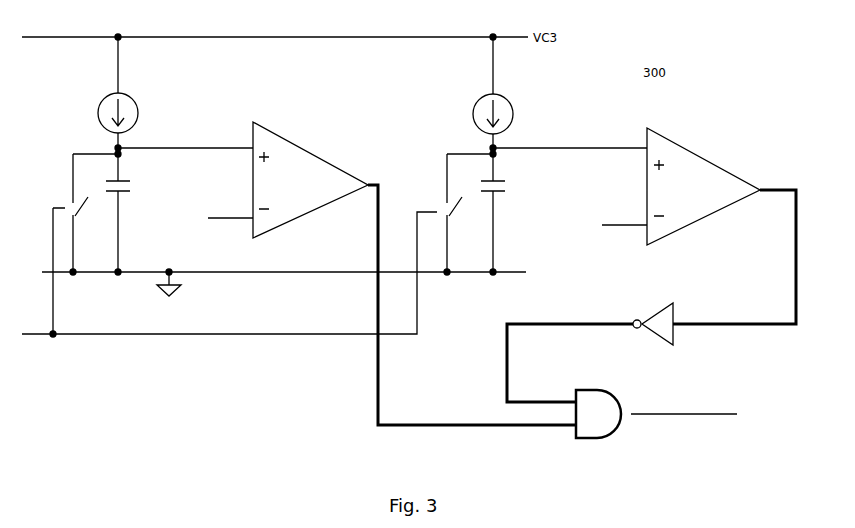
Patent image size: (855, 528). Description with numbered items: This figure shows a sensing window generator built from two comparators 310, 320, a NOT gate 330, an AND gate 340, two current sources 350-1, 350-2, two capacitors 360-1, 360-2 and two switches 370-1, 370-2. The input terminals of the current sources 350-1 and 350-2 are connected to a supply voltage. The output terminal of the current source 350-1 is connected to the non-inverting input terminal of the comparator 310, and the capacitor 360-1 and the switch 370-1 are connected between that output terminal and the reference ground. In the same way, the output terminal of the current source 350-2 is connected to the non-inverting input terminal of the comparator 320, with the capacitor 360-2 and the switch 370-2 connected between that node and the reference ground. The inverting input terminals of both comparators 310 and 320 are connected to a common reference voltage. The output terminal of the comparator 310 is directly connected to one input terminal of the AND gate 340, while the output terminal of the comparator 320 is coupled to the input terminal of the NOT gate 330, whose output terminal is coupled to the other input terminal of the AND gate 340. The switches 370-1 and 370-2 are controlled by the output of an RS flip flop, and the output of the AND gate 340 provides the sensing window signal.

The comparator 310 is at (313, 167).
The comparator 320 is at (710, 173).
The NOT gate 330 is at (672, 312).
The AND gate 340 is at (615, 440).
The current source 350-1 is at (137, 107).
The current source 350-2 is at (511, 108).
The capacitor 360-1 is at (121, 181).
The capacitor 360-2 is at (496, 181).
The switch 370-1 is at (82, 210).
The switch 370-2 is at (456, 210).